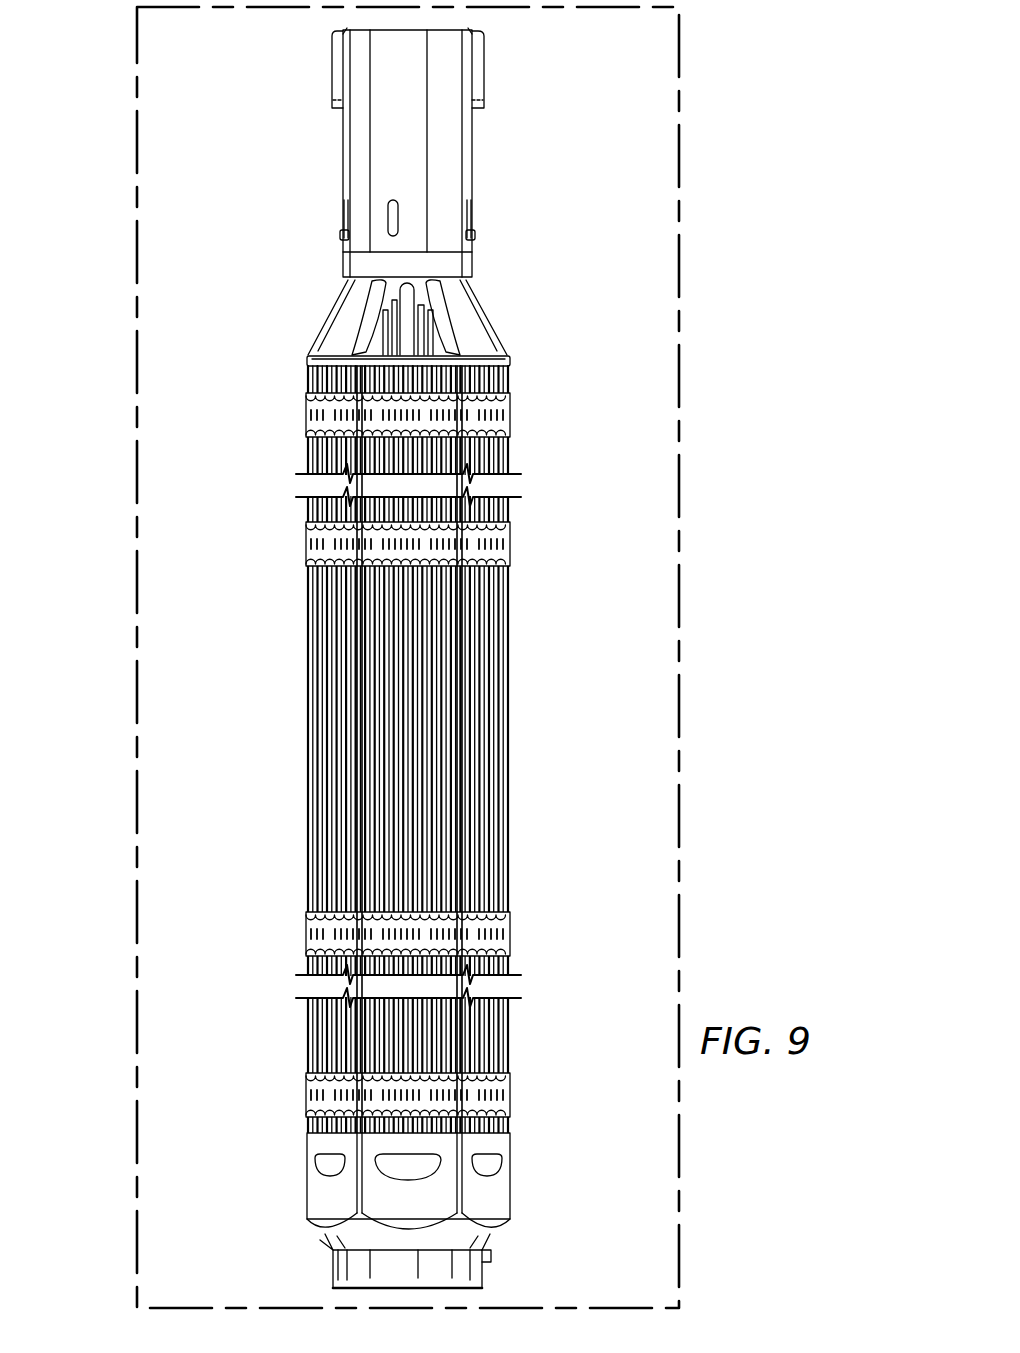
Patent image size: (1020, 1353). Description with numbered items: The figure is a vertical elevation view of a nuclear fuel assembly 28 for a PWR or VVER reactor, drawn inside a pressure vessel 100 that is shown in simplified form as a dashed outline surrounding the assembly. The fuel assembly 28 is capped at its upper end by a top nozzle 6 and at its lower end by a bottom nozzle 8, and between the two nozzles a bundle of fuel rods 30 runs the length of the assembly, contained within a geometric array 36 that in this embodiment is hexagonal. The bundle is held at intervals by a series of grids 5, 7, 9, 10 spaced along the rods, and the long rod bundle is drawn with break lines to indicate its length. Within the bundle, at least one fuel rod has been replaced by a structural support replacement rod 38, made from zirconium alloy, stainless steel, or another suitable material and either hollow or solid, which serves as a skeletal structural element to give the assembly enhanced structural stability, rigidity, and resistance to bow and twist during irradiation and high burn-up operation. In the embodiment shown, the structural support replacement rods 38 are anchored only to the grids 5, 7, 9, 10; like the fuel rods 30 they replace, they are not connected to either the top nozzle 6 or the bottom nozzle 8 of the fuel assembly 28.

The pressure vessel 100 is at (135, 454).
The fuel assembly 28 is at (588, 1056).
The top nozzle 6 is at (462, 185).
The grid 5 is at (510, 402).
The grid 7 is at (510, 541).
The grid 9 is at (508, 925).
The grid 10 is at (510, 1103).
The geometric array 36 is at (445, 749).
The fuel rods 30 is at (497, 690).
The structural support replacement rods 38 is at (368, 752).
The bottom nozzle 8 is at (500, 1188).